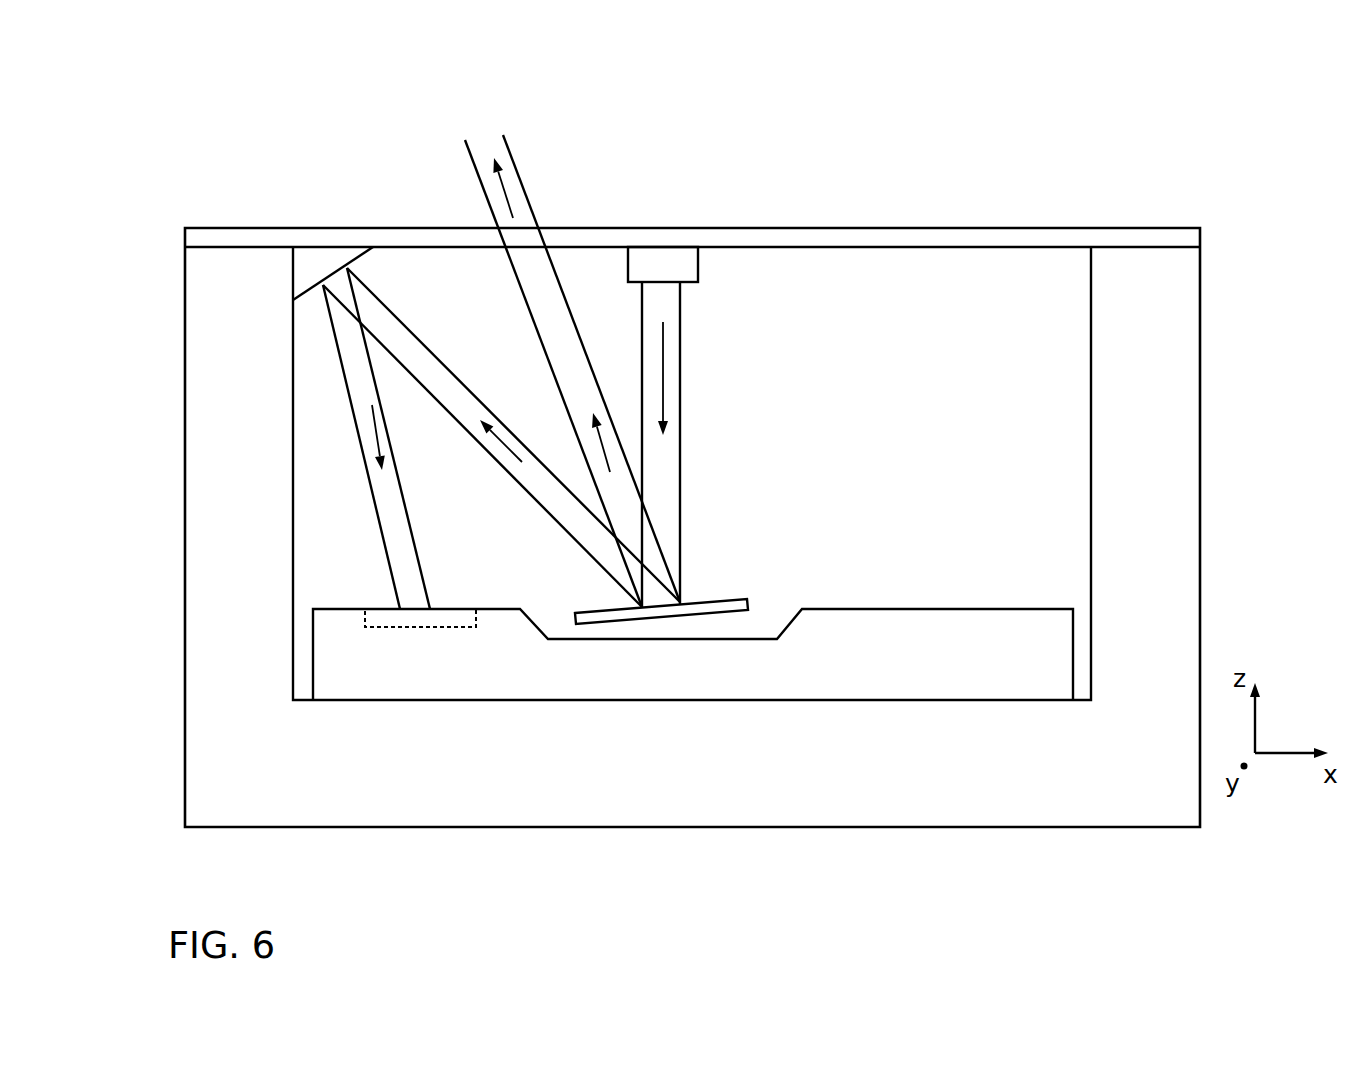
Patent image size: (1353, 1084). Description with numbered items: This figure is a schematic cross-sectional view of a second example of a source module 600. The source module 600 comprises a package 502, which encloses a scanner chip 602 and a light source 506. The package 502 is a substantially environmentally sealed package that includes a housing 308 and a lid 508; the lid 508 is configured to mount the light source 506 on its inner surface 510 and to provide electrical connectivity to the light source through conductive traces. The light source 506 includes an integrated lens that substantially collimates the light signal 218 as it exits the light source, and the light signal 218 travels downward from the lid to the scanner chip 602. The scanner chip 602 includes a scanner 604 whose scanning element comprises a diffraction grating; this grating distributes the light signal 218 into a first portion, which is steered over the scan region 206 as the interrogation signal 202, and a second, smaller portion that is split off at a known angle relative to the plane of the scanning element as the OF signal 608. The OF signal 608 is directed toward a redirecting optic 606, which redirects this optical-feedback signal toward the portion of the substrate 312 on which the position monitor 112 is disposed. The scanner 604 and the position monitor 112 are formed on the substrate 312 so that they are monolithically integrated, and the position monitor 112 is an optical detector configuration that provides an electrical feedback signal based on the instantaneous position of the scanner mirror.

The source module 600 is at (513, 399).
The redirecting optic 606 is at (322, 266).
The scan region 206 is at (550, 122).
The interrogation signal 202 is at (530, 200).
The lid 508 is at (1073, 238).
The inner surface 510 is at (849, 259).
The light source 506 is at (802, 317).
The light signal 218 is at (682, 465).
The scanner 604 is at (830, 550).
The OF signal 608 is at (466, 433).
The substrate 312 is at (857, 678).
The position monitor 112 is at (422, 618).
The scanner chip 602 is at (612, 738).
The housing 308 is at (1143, 797).
The package 502 is at (719, 551).